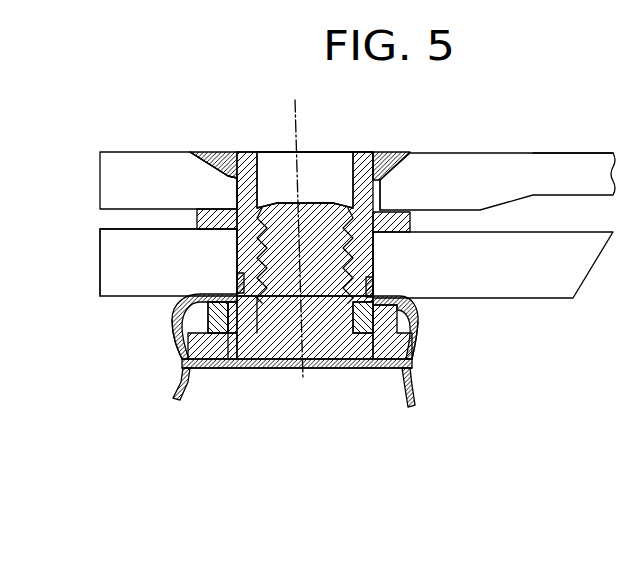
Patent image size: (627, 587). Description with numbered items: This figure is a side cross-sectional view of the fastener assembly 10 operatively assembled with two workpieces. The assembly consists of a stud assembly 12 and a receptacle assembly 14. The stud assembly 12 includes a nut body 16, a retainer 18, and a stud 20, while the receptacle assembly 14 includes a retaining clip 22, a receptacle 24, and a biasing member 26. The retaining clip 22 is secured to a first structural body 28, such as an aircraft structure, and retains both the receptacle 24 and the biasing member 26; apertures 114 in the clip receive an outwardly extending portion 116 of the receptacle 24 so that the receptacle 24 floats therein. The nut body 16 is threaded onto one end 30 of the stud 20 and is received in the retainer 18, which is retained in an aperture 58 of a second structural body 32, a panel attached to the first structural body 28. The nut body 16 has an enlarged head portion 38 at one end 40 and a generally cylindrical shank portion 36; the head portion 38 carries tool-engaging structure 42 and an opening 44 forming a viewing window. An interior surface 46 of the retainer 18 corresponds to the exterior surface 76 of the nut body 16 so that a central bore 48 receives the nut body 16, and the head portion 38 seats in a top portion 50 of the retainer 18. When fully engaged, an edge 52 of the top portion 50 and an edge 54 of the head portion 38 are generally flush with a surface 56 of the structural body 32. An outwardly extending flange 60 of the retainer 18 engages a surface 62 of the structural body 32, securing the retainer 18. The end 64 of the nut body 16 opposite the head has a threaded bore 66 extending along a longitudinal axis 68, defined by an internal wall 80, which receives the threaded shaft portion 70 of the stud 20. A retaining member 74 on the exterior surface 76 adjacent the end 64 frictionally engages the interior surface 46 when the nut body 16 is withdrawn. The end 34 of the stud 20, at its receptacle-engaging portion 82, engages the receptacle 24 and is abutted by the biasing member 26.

The fastener assembly 10 is at (529, 352).
The stud assembly 12 is at (385, 245).
The receptacle assembly 14 is at (422, 353).
The nut body 16 is at (233, 252).
The retainer 18 is at (384, 198).
The stud 20 is at (350, 358).
The retaining clip 22 is at (182, 405).
The receptacle 24 is at (203, 350).
The biasing member 26 is at (320, 374).
The first structural body 28 is at (491, 266).
The end of the stud 30 is at (338, 207).
The second structural body 32 is at (496, 186).
The end of the stud 34 is at (257, 370).
The shank portion 36 is at (380, 262).
The head portion 38 is at (390, 152).
The end of the nut body 40 is at (247, 152).
The tool-engaging structure 42 is at (283, 152).
The opening 44 is at (323, 151).
The interior surface of the retainer 46 is at (237, 190).
The central bore 48 is at (367, 152).
The top portion of the retainer 50 is at (214, 160).
The edge of the top portion 52 is at (190, 153).
The edge of the head portion 54 is at (240, 156).
The surface of the structural body 56 is at (568, 152).
The aperture 58 is at (264, 183).
The outwardly extending flange 60 is at (411, 220).
The surface of the structural body 62 is at (137, 211).
The end of the nut body 64 is at (416, 322).
The threaded bore 66 is at (264, 258).
The longitudinal axis 68 is at (295, 227).
The threaded shaft portion 70 is at (236, 258).
The retaining member 74 is at (237, 281).
The exterior surface of the nut body 76 is at (235, 240).
The internal wall 80 is at (338, 248).
The receptacle-engaging portion 82 is at (228, 370).
The apertures 114 is at (182, 372).
The outwardly extending portion 116 is at (416, 368).